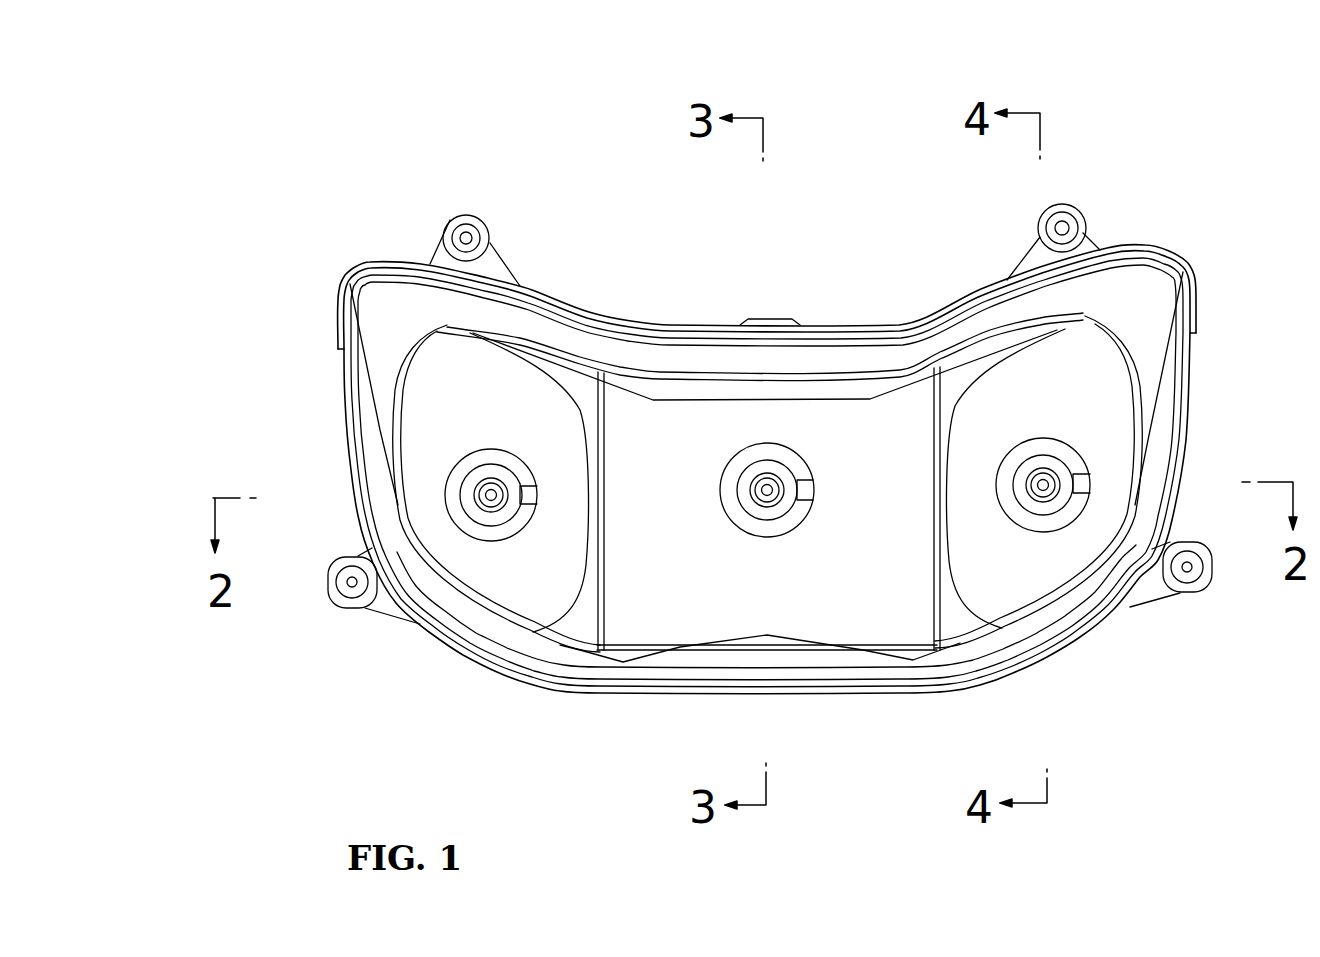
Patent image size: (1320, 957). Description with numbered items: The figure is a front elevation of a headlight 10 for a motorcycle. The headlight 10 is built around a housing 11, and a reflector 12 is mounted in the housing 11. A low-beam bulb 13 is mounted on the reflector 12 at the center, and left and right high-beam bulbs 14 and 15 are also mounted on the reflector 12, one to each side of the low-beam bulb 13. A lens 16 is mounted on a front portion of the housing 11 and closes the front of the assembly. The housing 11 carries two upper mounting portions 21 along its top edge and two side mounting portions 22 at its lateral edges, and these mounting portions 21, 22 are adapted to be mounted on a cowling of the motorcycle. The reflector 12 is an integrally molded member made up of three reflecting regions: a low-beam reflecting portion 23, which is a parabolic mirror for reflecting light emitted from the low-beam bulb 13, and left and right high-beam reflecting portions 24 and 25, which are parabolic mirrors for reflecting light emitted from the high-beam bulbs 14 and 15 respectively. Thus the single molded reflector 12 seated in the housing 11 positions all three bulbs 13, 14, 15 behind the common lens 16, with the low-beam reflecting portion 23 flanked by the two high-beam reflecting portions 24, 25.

The headlight 10 is at (320, 173).
The housing 11 is at (343, 402).
The reflector 12 is at (683, 443).
The low-beam bulb 13 is at (777, 499).
The high-beam bulb 14 is at (1040, 497).
The high-beam bulb 15 is at (502, 505).
The lens 16 is at (557, 692).
The upper mounting portion 21 is at (457, 215).
The side mounting portion 22 is at (360, 617).
The low-beam reflecting portion 23 is at (706, 592).
The high-beam reflecting portion 24 is at (1067, 567).
The high-beam reflecting portion 25 is at (492, 585).